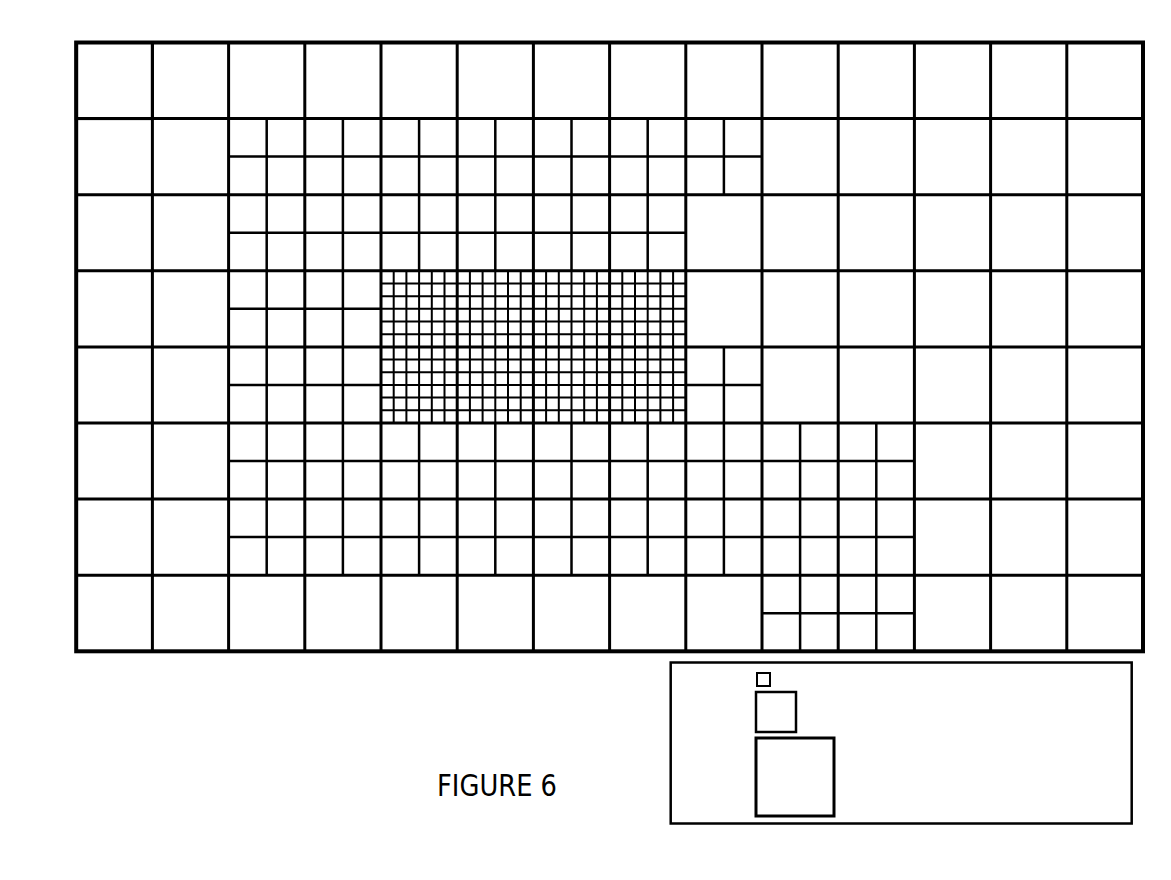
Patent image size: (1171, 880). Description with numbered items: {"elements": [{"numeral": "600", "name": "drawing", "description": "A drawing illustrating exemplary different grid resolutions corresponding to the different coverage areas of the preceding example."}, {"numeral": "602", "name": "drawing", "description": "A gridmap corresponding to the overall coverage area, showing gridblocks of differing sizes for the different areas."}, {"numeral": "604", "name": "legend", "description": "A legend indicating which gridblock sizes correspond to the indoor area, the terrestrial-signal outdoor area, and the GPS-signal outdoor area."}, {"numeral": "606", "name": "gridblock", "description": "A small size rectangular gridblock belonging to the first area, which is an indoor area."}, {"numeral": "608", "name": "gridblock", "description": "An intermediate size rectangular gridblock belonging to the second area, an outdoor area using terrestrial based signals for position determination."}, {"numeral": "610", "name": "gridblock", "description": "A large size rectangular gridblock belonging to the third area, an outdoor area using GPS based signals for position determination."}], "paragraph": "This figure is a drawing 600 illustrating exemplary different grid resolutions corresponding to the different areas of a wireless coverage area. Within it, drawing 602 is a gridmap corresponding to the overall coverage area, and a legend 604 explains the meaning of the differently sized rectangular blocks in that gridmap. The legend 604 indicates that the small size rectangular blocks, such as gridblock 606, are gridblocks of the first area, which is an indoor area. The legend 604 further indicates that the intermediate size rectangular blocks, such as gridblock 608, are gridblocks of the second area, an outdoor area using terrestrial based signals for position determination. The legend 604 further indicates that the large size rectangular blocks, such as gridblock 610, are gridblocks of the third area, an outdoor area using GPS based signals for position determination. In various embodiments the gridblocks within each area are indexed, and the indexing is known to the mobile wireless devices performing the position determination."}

The grid map of geographic area 600 is at (86, 13).
The gridblock (third area gridblock) 602 is at (120, 37).
The legend 604 is at (671, 743).
The first area gridblock - indoor 606 is at (755, 678).
The second area gridblock - outdoor including terrestrial based signals 608 is at (756, 711).
The third area gridblock - outdoor GPS signal based 610 is at (756, 777).